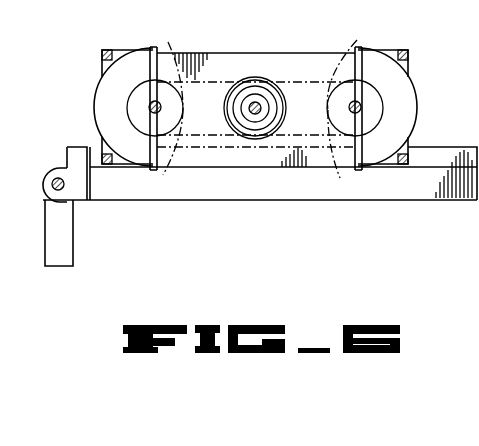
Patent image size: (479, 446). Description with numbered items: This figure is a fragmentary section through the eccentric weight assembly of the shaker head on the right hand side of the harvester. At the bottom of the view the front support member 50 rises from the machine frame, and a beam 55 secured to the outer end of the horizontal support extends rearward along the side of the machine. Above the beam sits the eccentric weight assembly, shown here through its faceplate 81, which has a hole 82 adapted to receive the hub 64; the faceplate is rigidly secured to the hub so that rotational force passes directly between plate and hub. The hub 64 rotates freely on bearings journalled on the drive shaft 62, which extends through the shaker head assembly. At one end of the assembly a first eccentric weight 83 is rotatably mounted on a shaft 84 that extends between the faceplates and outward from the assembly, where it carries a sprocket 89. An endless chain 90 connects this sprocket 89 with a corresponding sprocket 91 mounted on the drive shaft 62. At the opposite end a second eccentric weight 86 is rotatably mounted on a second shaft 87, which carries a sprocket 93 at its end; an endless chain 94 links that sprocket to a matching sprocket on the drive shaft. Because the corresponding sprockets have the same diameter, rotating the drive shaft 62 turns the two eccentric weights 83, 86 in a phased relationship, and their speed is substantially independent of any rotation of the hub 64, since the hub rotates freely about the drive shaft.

The front support member 50 is at (65, 243).
The beam 55 is at (398, 200).
The drive shaft 62 is at (245, 102).
The hub 64 is at (258, 104).
The faceplate 81 is at (308, 52).
The hole 82 is at (258, 118).
The first eccentric weight 83 is at (108, 83).
The shaft 84 is at (150, 107).
The second eccentric weight 86 is at (402, 86).
The second shaft 87 is at (355, 107).
The sprocket 89 is at (150, 155).
The endless chain 90 is at (165, 63).
The sprocket 91 is at (220, 122).
The sprocket 93 is at (353, 63).
The endless chain 94 is at (350, 155).